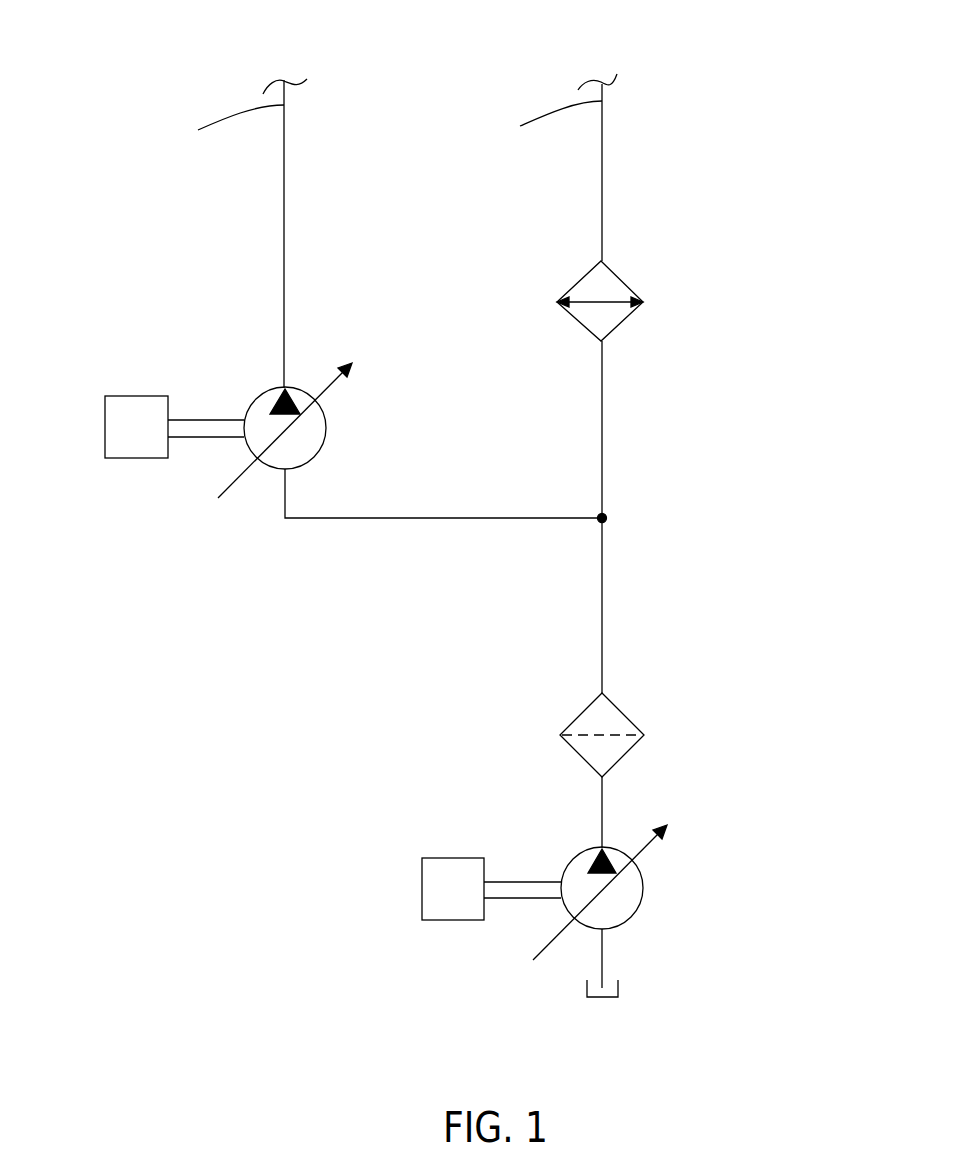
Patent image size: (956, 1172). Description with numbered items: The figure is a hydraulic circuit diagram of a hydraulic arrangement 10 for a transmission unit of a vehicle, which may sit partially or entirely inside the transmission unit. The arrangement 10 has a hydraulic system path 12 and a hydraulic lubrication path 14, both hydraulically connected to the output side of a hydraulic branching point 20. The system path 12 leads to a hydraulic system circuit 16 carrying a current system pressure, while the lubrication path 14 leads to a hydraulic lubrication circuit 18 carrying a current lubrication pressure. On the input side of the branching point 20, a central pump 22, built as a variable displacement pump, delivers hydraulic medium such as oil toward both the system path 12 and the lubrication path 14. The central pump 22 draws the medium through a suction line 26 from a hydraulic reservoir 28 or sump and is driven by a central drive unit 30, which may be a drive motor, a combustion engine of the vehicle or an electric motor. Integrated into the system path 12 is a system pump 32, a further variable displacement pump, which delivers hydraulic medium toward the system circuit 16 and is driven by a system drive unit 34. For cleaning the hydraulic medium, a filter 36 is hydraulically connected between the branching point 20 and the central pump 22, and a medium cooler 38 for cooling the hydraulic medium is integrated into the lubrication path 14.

The hydraulic arrangement 10 is at (744, 133).
The hydraulic system path 12 is at (360, 535).
The hydraulic lubrication path 14 is at (588, 430).
The hydraulic system circuit 16 is at (268, 68).
The hydraulic lubrication circuit 18 is at (595, 68).
The hydraulic branching point 20 is at (614, 517).
The central pump 22 is at (570, 830).
The suction line 26 is at (605, 950).
The hydraulic reservoir 28 is at (598, 998).
The central drive unit 30 is at (448, 920).
The system pump 32 is at (246, 382).
The system drive unit 34 is at (118, 458).
The filter 36 is at (575, 693).
The medium cooler 38 is at (548, 288).